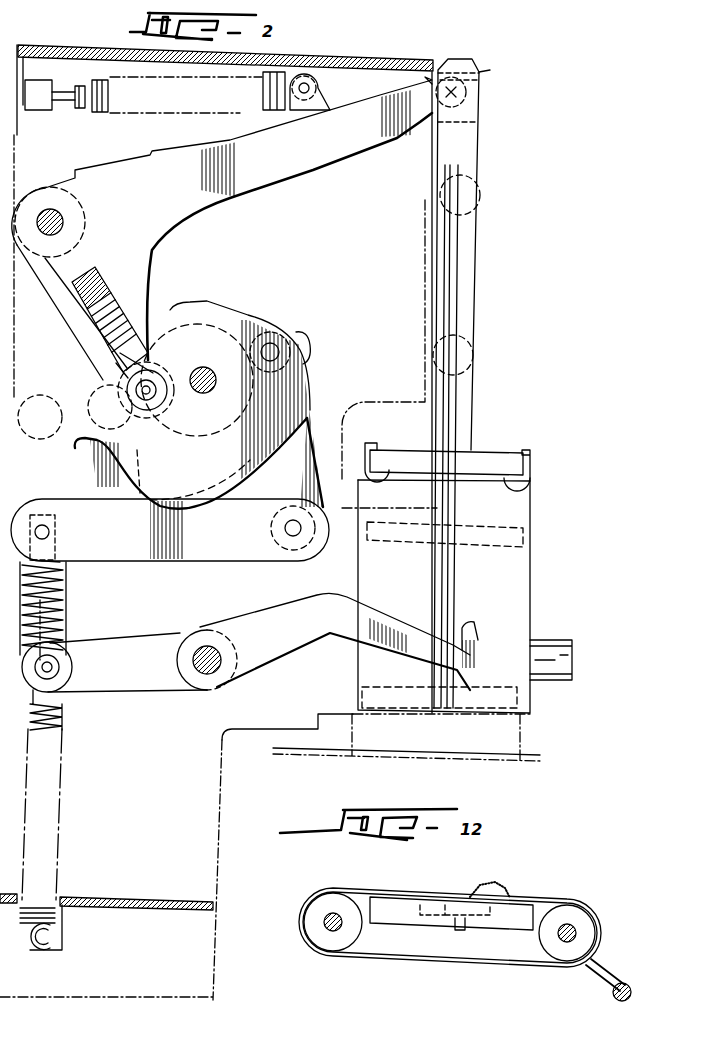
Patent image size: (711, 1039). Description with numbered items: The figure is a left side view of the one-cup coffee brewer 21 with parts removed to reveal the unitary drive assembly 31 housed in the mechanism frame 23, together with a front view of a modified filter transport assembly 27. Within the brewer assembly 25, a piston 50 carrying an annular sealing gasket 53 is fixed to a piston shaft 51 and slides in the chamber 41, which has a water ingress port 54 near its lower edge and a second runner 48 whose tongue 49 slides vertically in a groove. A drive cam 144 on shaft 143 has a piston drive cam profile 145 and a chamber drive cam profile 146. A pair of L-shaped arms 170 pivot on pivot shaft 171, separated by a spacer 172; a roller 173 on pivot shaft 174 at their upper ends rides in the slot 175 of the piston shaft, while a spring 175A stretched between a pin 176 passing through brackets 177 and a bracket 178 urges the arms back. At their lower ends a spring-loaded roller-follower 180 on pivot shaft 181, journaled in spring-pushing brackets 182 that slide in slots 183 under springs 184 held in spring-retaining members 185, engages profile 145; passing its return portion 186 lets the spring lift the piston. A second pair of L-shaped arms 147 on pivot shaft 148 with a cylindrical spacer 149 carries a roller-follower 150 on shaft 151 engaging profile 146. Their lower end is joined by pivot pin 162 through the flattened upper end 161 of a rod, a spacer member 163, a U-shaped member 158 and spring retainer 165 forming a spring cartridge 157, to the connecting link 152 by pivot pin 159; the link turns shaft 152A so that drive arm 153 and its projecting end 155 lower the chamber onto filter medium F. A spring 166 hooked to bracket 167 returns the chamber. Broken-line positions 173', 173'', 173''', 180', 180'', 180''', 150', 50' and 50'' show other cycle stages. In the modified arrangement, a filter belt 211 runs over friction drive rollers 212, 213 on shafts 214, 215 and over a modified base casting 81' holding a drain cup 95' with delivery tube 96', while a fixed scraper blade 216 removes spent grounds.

In FIG. 2, the mechanism frame 23 is at (122, 898).
In FIG. 2, the return portion of cam profile 186 is at (103, 413).
In FIG. 2, the bracket 178 is at (37, 92).
In FIG. 2, the spring 175A is at (200, 96).
In FIG. 2, the brackets 177 is at (296, 112).
In FIG. 2, the pin 176 is at (313, 88).
In FIG. 2, the L-shaped arms 170 is at (248, 180).
In FIG. 2, the pivot shaft 171 is at (62, 223).
In FIG. 2, the spacer 172 is at (78, 200).
In FIG. 2, the roller 173 is at (446, 365).
In FIG. 2, the piston shaft 51 is at (470, 277).
In FIG. 2, the roller (rest position) 173' is at (498, 116).
In FIG. 2, the roller (chamber-sealed position) 173'' is at (508, 195).
In FIG. 2, the roller (bottom-stroke position) 173''' is at (492, 355).
In FIG. 2, the slot 175 is at (482, 70).
In FIG. 2, the pivot shaft 174 is at (485, 85).
In FIG. 2, the unitary drive assembly 31 is at (482, 122).
In FIG. 2, the one-cup coffee brewer 21 is at (560, 274).
In FIG. 2, the spring-retaining members 185 is at (10, 290).
In FIG. 2, the springs 184 is at (10, 314).
In FIG. 2, the slot 183 is at (112, 357).
In FIG. 2, the spring-pushing brackets 182 is at (12, 338).
In FIG. 2, the pivot shaft 181 is at (12, 360).
In FIG. 2, the spring-loaded roller-follower 180 is at (197, 355).
In FIG. 2, the roller-follower (rest position) 180' is at (188, 475).
In FIG. 2, the roller-follower (chamber-sealed position) 180'' is at (71, 425).
In FIG. 2, the roller-follower (bottom-stroke position) 180''' is at (39, 407).
In FIG. 2, the piston drive cam profile 145 is at (108, 456).
In FIG. 2, the chamber drive cam profile 146 is at (215, 370).
In FIG. 2, the shaft 143 is at (248, 347).
In FIG. 2, the roller-follower 150 is at (314, 326).
In FIG. 2, the shaft 151 is at (300, 348).
In FIG. 2, the roller-follower (chamber-lowered position) 150' is at (335, 351).
In FIG. 2, the drive cam 144 is at (307, 387).
In FIG. 2, the cylindrical spacer 149 is at (283, 505).
In FIG. 2, the L-shaped arms 147 is at (183, 550).
In FIG. 2, the pivot shaft 148 is at (285, 527).
In FIG. 2, the flattened upper end 161 is at (56, 518).
In FIG. 2, the pivot pin 162 is at (50, 532).
In FIG. 2, the spacer member 163 is at (62, 560).
In FIG. 2, the U-shaped member 158 is at (66, 590).
In FIG. 2, the spring cartridge 157 is at (72, 608).
In FIG. 2, the spring retainer 165 is at (62, 636).
In FIG. 2, the pivot pin 159 is at (62, 667).
In FIG. 2, the connecting link 152 is at (116, 680).
In FIG. 2, the shaft 152A is at (201, 684).
In FIG. 2, the drive arm 153 is at (286, 645).
In FIG. 2, the projecting end 155 is at (470, 628).
In FIG. 2, the chamber 41 is at (522, 593).
In FIG. 2, the piston 50 is at (447, 446).
In FIG. 2, the annular sealing gasket 53 is at (532, 474).
In FIG. 2, the second runner 48 is at (437, 517).
In FIG. 2, the tongue 49 is at (453, 522).
In FIG. 2, the piston (chamber-sealed position) 50' is at (481, 522).
In FIG. 2, the piston (bottom-stroke position) 50'' is at (487, 696).
In FIG. 2, the brewer assembly 25 is at (548, 545).
In FIG. 2, the water ingress port 54 is at (556, 641).
In FIG. 2, the filter medium F is at (537, 756).
In FIG. 2, the spring 166 is at (52, 800).
In FIG. 2, the bracket 167 is at (60, 927).
In FIG. 12, the filter transport assembly 27 is at (558, 876).
In FIG. 12, the filter belt 211 is at (483, 963).
In FIG. 12, the friction drive roller 213 is at (320, 940).
In FIG. 12, the shaft 215 is at (325, 922).
In FIG. 12, the friction drive roller 212 is at (586, 943).
In FIG. 12, the shaft 214 is at (578, 932).
In FIG. 12, the modified base casting 81' is at (451, 890).
In FIG. 12, the drain cup 95' is at (441, 928).
In FIG. 12, the delivery tube 96' is at (478, 935).
In FIG. 12, the fixed scraper blade 216 is at (594, 977).